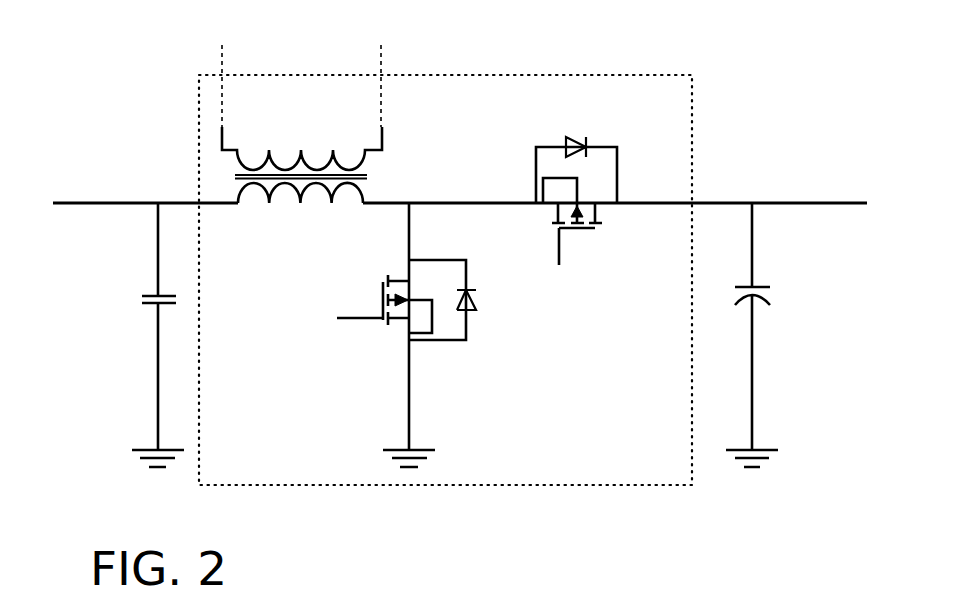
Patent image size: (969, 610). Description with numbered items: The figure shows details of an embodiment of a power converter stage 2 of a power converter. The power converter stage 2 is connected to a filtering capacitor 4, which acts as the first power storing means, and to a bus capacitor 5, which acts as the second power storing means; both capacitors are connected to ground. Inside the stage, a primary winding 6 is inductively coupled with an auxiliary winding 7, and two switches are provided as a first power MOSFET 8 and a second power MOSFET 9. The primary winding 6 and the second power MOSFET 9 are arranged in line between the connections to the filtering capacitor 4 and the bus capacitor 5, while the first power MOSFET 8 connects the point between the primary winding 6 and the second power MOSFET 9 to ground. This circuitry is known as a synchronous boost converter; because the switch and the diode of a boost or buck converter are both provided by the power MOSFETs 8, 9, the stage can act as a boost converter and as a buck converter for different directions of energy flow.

The power converter stage 2 is at (692, 157).
The filtering capacitor 4 is at (152, 292).
The bus capacitor 5 is at (762, 288).
The primary winding 6 is at (363, 191).
The auxiliary winding 7 is at (374, 147).
The first power MOSFET 8 is at (440, 253).
The second power MOSFET 9 is at (570, 129).